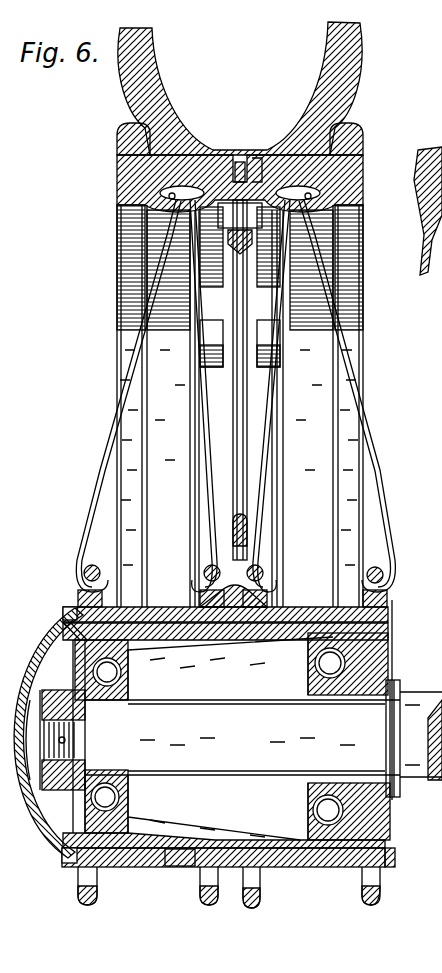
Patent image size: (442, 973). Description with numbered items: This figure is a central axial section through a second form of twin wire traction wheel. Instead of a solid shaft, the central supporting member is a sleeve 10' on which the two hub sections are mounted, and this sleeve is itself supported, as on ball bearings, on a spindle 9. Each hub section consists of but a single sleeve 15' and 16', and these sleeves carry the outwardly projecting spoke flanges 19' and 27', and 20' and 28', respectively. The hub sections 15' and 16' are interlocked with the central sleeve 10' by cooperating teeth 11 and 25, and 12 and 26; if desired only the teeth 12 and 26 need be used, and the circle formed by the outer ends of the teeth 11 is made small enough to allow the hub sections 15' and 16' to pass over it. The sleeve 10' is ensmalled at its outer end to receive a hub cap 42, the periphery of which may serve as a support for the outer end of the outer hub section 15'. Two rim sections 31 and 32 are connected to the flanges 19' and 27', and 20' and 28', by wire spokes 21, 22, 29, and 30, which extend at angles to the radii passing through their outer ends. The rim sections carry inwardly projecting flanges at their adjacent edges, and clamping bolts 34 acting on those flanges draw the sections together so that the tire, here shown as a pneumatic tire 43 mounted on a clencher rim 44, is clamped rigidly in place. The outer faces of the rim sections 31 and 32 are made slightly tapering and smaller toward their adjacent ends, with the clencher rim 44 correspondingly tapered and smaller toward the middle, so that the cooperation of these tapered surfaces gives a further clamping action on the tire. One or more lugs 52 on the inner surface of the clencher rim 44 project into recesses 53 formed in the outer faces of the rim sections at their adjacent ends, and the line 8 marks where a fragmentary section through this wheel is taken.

The pneumatic tire 43 is at (355, 88).
The clencher rim 44 is at (340, 132).
The lug 52 is at (233, 157).
The section line 8 is at (240, 160).
The recess 53 is at (263, 157).
The rim section 31 is at (117, 180).
The rim section 32 is at (362, 187).
The clamping bolt 34 is at (130, 232).
The wire spoke 21 is at (187, 277).
The wire spoke 22 is at (287, 313).
The wire spoke 29 is at (88, 517).
The wire spoke 30 is at (380, 517).
The spindle 9 is at (263, 738).
The hub cap 42 is at (43, 827).
The tooth 11 is at (133, 867).
The tooth 25 is at (143, 860).
The hub section sleeve 15' is at (215, 879).
The sleeve 10' is at (287, 884).
The hub section sleeve 16' is at (338, 884).
The tooth 26 is at (383, 863).
The tooth 12 is at (385, 860).
The spoke flange 27' is at (83, 910).
The spoke flange 19' is at (212, 906).
The spoke flange 20' is at (256, 906).
The spoke flange 28' is at (368, 909).